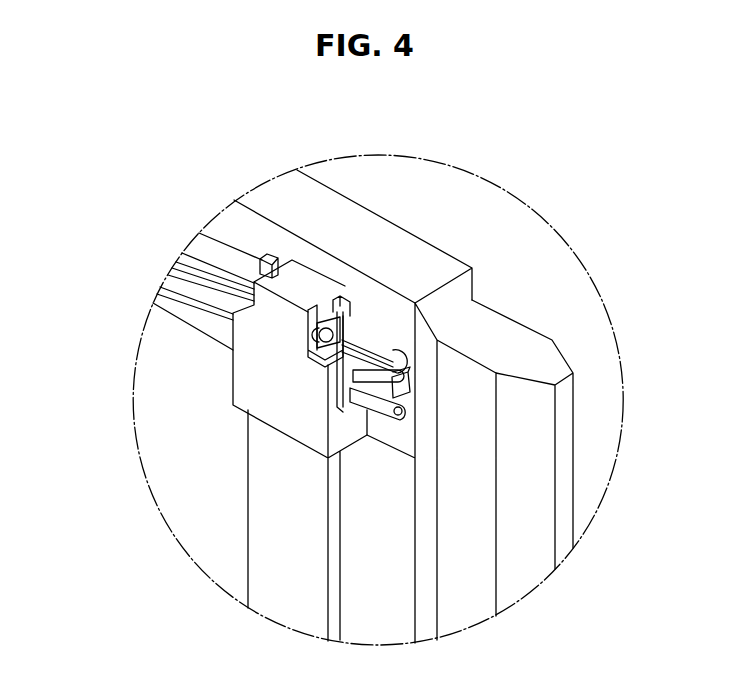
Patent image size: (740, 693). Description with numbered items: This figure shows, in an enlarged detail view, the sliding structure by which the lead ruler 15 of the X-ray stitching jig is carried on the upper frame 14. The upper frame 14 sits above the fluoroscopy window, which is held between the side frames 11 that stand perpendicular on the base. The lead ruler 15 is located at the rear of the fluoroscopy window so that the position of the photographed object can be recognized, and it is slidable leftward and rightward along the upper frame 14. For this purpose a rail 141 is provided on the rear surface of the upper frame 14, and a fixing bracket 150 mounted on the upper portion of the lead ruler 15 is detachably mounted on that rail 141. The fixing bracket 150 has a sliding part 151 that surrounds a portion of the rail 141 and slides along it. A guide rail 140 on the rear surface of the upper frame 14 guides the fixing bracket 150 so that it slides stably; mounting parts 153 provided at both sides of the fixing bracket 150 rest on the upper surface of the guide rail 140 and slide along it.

The side frame 11 is at (567, 413).
The upper frame 14 is at (343, 218).
The lead ruler 15 is at (267, 558).
The guide rail 140 is at (383, 348).
The rail 141 is at (410, 384).
The fixing bracket 150 is at (260, 381).
The sliding part 151 is at (440, 343).
The mounting part 153 is at (341, 292).